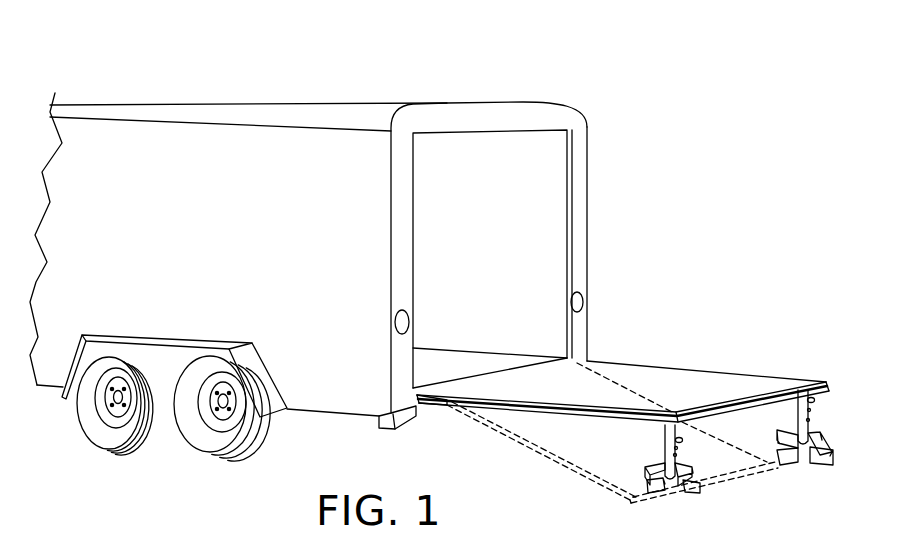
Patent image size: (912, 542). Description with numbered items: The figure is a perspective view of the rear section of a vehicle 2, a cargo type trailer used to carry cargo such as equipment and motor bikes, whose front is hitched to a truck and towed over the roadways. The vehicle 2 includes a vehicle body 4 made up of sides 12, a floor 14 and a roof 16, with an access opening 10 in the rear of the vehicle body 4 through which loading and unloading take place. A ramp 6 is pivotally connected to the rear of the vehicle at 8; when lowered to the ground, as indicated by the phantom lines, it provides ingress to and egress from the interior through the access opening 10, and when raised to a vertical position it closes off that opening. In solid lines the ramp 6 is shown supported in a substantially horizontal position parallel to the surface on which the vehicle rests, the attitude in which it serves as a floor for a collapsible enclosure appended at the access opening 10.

The vehicle 2 is at (152, 97).
The vehicle body 4 is at (372, 100).
The roof 16 is at (242, 115).
The access opening 10 is at (523, 178).
The sides 12 is at (534, 222).
The floor 14 is at (488, 366).
The ramp 6 is at (718, 372).
The pivotal connection 8 is at (423, 398).